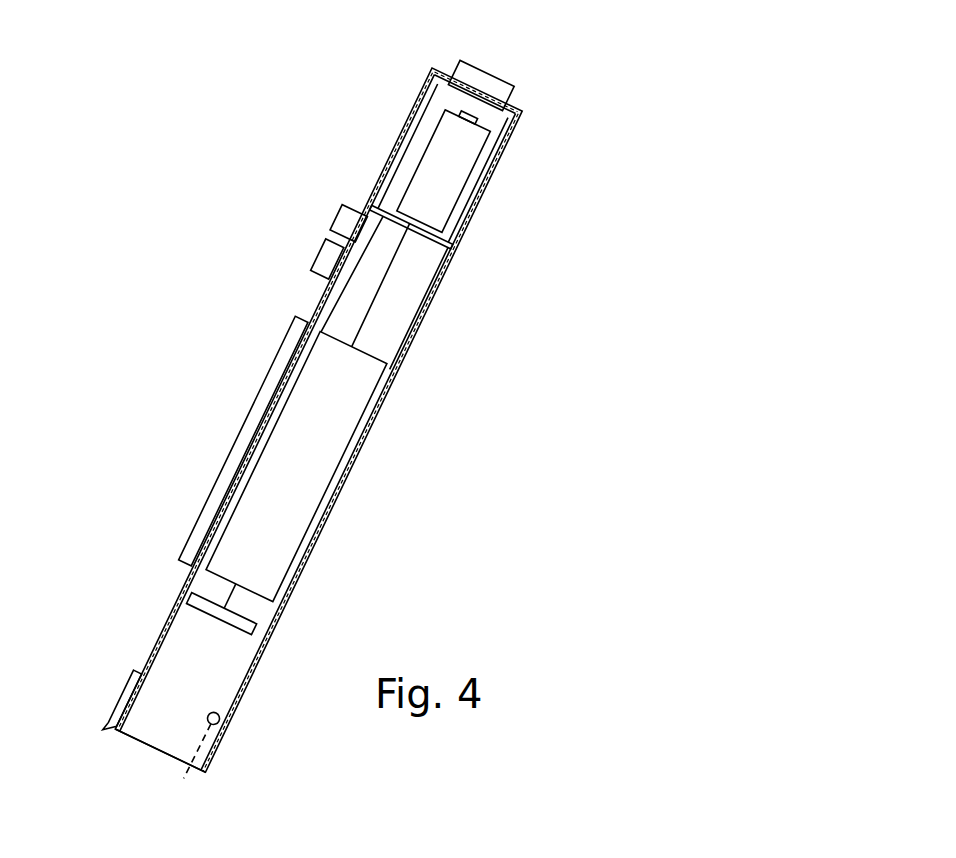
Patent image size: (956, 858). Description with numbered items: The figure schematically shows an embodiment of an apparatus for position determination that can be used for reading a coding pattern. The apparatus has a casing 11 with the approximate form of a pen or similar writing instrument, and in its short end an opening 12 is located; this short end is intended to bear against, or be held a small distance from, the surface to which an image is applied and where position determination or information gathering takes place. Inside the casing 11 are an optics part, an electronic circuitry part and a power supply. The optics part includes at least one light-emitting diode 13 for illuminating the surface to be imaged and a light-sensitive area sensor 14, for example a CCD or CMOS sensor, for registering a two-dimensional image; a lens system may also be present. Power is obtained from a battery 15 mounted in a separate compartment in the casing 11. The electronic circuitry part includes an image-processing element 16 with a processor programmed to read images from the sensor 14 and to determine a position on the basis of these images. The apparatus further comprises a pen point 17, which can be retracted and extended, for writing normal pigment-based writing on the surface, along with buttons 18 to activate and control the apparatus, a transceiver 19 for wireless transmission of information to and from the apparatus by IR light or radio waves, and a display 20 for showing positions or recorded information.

The casing 11 is at (402, 388).
The opening 12 is at (150, 746).
The light-emitting diode 13 is at (222, 720).
The light-sensitive area sensor 14 is at (262, 613).
The battery 15 is at (443, 178).
The image-processing element 16 is at (297, 497).
The pen point 17 is at (123, 690).
The buttons 18 is at (343, 223).
The transceiver 19 is at (486, 78).
The display 20 is at (251, 433).